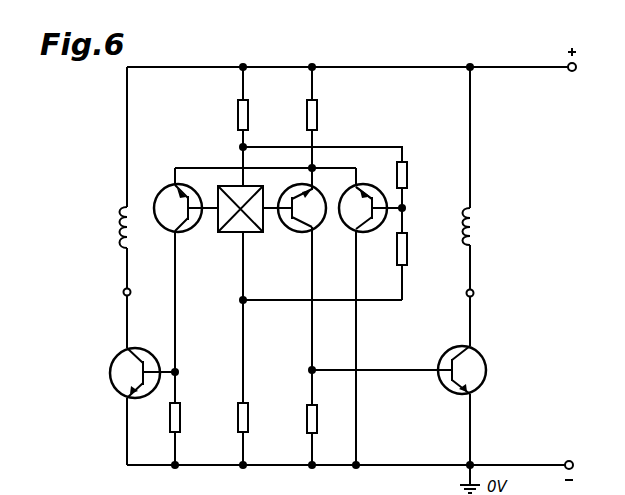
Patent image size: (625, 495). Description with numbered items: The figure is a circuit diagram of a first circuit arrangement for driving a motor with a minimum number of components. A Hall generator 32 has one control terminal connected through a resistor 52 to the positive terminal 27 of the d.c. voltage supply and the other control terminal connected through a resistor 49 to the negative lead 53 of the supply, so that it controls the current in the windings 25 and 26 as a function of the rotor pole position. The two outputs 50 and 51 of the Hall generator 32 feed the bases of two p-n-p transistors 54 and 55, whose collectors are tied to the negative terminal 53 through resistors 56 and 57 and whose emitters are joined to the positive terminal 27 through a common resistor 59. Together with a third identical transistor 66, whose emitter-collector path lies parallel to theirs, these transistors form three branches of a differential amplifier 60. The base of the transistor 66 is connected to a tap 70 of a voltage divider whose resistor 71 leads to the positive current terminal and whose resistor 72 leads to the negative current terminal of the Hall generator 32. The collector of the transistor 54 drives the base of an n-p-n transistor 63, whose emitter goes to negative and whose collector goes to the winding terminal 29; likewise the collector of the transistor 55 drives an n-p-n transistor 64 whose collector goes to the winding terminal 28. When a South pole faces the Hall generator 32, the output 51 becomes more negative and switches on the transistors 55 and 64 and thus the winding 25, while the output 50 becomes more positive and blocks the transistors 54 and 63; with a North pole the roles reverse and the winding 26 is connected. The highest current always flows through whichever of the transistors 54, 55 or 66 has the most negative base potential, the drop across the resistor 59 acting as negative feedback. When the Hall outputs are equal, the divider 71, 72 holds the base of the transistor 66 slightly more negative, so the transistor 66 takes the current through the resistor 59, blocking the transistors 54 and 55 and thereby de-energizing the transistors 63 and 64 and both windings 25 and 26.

The winding 25 is at (473, 212).
The winding 26 is at (122, 240).
The positive terminal 27 is at (577, 67).
The winding terminal 28 is at (474, 292).
The winding terminal 29 is at (131, 291).
The Hall generator 32 is at (237, 233).
The resistor 49 is at (246, 420).
The output 50 is at (207, 212).
The output 51 is at (276, 212).
The resistor 52 is at (244, 118).
The negative lead 53 is at (500, 464).
The p-n-p transistor 54 is at (165, 227).
The p-n-p transistor 55 is at (322, 224).
The resistor 56 is at (180, 414).
The resistor 57 is at (316, 418).
The common resistor 59 is at (313, 118).
The differential amplifier 60 is at (277, 273).
The n-p-n transistor 63 is at (140, 350).
The n-p-n transistor 64 is at (479, 350).
The transistor 66 is at (364, 190).
The tap 70 is at (406, 208).
The resistor 71 is at (403, 178).
The resistor 72 is at (403, 250).